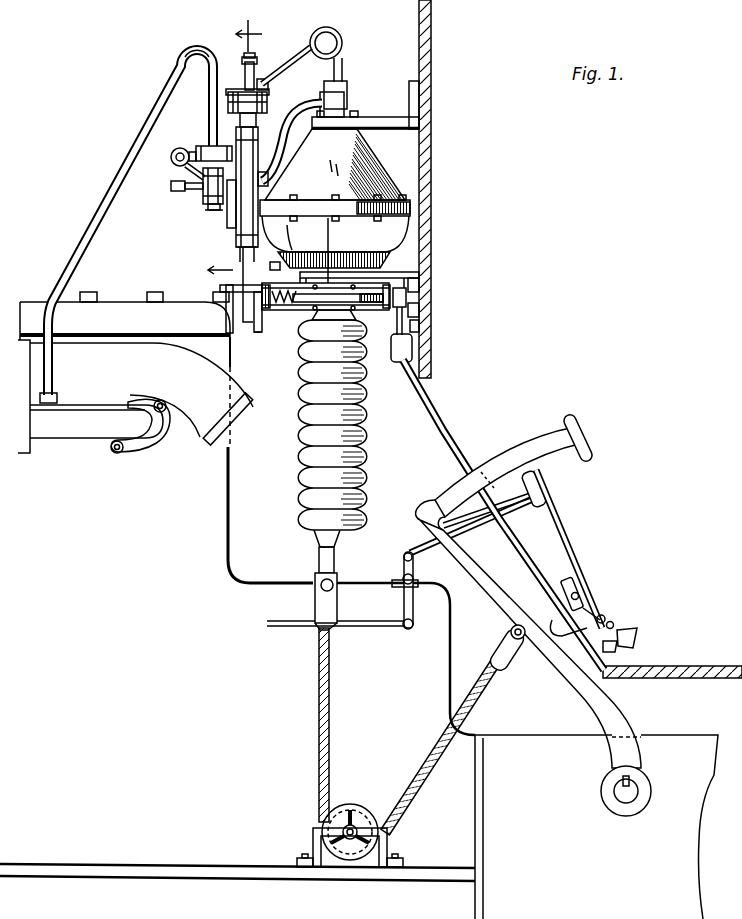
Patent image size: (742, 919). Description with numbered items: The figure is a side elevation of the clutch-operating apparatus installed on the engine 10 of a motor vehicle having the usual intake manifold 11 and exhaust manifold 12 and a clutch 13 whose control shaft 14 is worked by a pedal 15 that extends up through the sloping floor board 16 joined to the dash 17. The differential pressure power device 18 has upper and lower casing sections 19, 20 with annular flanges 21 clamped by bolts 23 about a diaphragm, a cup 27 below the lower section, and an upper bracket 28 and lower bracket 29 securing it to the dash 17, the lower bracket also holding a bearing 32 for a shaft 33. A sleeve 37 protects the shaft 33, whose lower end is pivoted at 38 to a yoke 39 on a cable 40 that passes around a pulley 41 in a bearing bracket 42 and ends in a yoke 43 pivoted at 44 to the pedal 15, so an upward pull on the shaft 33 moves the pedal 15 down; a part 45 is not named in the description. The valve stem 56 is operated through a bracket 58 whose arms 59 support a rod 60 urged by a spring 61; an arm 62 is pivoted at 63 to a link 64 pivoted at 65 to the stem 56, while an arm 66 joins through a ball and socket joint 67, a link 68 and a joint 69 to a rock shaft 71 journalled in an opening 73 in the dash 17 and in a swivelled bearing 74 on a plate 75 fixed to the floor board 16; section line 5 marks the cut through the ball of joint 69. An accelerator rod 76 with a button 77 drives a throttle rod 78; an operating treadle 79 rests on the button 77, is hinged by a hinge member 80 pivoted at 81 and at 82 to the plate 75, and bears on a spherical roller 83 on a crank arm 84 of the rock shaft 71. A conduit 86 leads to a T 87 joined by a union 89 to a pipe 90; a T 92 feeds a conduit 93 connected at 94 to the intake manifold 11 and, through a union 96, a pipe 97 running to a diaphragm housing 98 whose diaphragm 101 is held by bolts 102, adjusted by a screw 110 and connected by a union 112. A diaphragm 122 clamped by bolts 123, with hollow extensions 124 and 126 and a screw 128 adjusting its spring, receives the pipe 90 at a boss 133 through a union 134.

The section line 5- 5 is at (223, 145).
The engine 10 is at (120, 302).
The intake manifold 11 is at (77, 438).
The exhaust manifold 12 is at (203, 410).
The clutch 13 is at (684, 737).
The control shaft 14 is at (622, 796).
The pedal 15 is at (512, 455).
The floor board 16 is at (450, 426).
The dash 17 is at (432, 348).
The differential pressure power device 18 is at (416, 175).
The upper casing section 19 is at (385, 158).
The lower casing section 20 is at (290, 233).
The annular flanges 21 is at (412, 209).
The bolts 23 is at (412, 202).
The cup 27 is at (409, 236).
The upper bracket 28 is at (383, 117).
The lower bracket 29 is at (392, 260).
The bearing 32 is at (328, 250).
The shaft 33 is at (318, 555).
The expansible and contractible sleeve 37 is at (300, 452).
The pivotal connection 38 is at (315, 588).
The yoke 39 is at (333, 590).
The flexible cable 40 is at (319, 705).
The pulley 41 is at (352, 804).
The bearing bracket 42 is at (388, 850).
The yoke 43 is at (492, 674).
The pivotal connection 44 is at (508, 631).
The valve cylinder 45 is at (229, 227).
The valve stem 56 is at (235, 252).
The bracket 58 is at (300, 312).
The outstanding arms 59 is at (276, 262).
The rod 60 is at (376, 310).
The spring 61 is at (299, 280).
The arm 62 is at (258, 333).
The pivotal connection 63 is at (264, 310).
The link 64 is at (238, 296).
The pivotal connection 65 is at (222, 286).
The arm 66 is at (415, 282).
The ball and socket joint 67 is at (410, 298).
The link 68 is at (420, 309).
The ball and socket joint 69 is at (420, 326).
The rock shaft 71 is at (540, 518).
The opening 73 is at (414, 352).
The bearing 74 is at (575, 585).
The plate 75 is at (580, 594).
The accelerator rod 76 is at (478, 527).
The button 77 is at (545, 490).
The throttle rod 78 is at (368, 627).
The operating treadle 79 is at (575, 540).
The hinge member 80 is at (617, 652).
The pivotal connection 81 is at (637, 638).
The pivotal connection 82 is at (556, 619).
The spherical roller 83 is at (606, 616).
The crank arm 84 is at (614, 623).
The conduit 86 is at (300, 100).
The T 87 is at (348, 90).
The union 89 is at (345, 70).
The pipe 90 is at (341, 48).
The T 92 is at (210, 135).
The conduit 93 is at (116, 183).
The connection 94 is at (55, 396).
The union 96 is at (172, 158).
The pipe 97 is at (200, 150).
The diaphragm housing 98 is at (215, 201).
The diaphragm 101 is at (204, 208).
The bolts 102 is at (208, 204).
The screw 110 is at (171, 186).
The union 112 is at (190, 170).
The diaphragm 122 is at (230, 103).
The bolts 123 is at (228, 93).
The hollow axial extension 124 is at (259, 128).
The hollow axial extension 126 is at (237, 85).
The screw 128 is at (250, 58).
The boss 133 is at (258, 76).
The union 134 is at (289, 68).